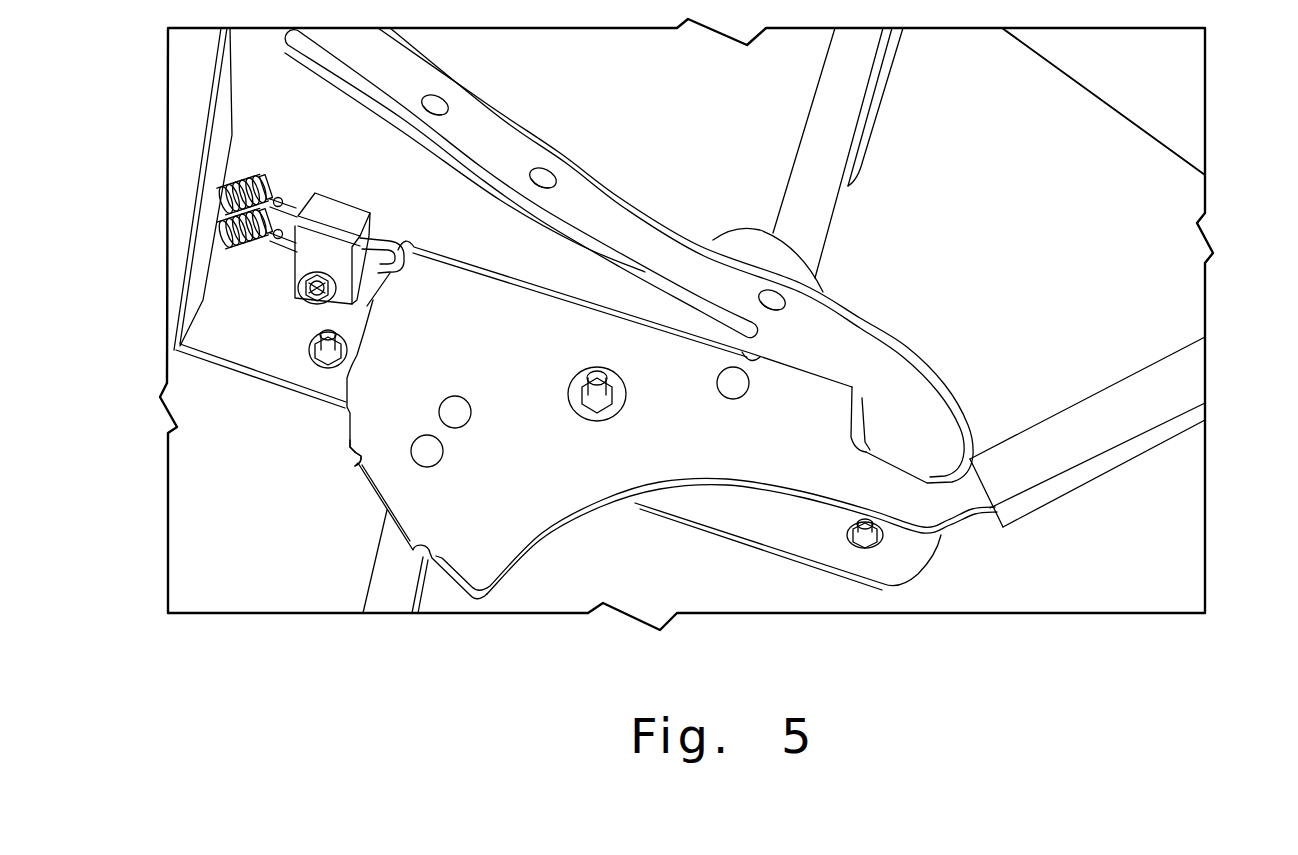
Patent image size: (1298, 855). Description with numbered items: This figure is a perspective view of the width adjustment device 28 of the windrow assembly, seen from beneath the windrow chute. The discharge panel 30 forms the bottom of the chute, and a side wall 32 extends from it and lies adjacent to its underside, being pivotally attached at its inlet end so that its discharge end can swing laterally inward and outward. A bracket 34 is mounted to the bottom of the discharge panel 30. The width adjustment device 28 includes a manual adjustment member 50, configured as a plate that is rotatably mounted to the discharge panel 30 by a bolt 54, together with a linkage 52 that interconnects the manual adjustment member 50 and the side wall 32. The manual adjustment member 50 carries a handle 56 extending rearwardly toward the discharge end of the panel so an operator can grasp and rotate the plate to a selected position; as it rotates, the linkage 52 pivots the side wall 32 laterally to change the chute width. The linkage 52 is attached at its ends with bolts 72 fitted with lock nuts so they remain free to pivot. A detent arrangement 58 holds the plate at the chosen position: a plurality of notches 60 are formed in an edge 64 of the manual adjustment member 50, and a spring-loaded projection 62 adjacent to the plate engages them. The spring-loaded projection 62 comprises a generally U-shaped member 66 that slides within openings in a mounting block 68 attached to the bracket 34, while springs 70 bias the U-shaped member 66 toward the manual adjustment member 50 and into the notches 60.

The width adjustment device 28 is at (744, 588).
The discharge panel 30 is at (1167, 293).
The side wall 32 is at (1185, 68).
The bracket 34 is at (490, 113).
The manual adjustment member 50 is at (513, 567).
The linkage 52 is at (827, 188).
The bolt 54 is at (617, 417).
The handle 56 is at (1077, 480).
The detent arrangement 58 is at (274, 318).
The notch 60 is at (422, 556).
The spring-loaded projection 62 is at (397, 229).
The edge 64 is at (345, 432).
The U-shaped member 66 is at (291, 217).
The mounting block 68 is at (343, 212).
The spring 70 is at (246, 192).
The bolt 72 is at (443, 457).